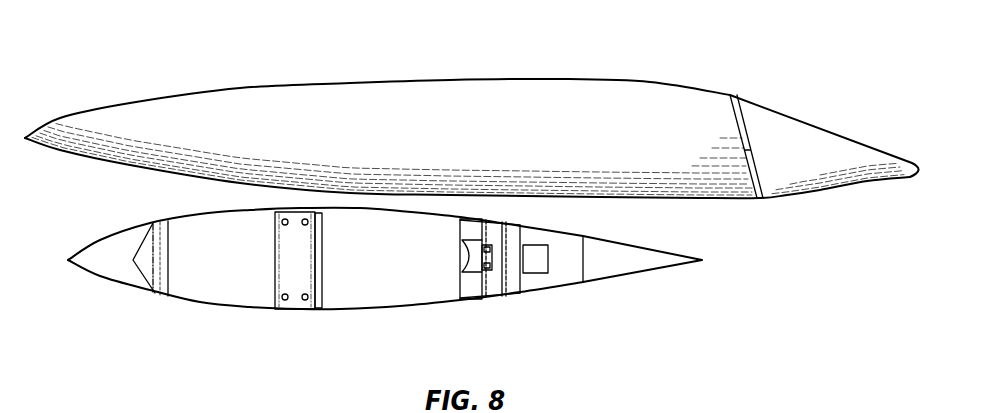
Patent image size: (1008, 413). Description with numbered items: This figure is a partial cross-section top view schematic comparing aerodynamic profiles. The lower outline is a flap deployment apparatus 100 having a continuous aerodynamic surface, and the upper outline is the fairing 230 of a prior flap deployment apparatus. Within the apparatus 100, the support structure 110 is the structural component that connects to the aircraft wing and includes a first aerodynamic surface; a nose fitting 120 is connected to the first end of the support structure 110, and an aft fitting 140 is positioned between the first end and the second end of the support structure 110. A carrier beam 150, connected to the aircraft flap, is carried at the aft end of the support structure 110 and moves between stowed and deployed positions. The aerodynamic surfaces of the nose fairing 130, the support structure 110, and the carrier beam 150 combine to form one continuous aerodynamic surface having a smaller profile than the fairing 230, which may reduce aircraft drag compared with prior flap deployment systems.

The flap deployment apparatus 100 is at (406, 277).
The support structure 110 is at (410, 308).
The nose fitting 120 is at (156, 295).
The nose fairing 130 is at (112, 237).
The aft fitting 140 is at (297, 302).
The carrier beam 150 is at (565, 282).
The fairing 230 is at (576, 80).